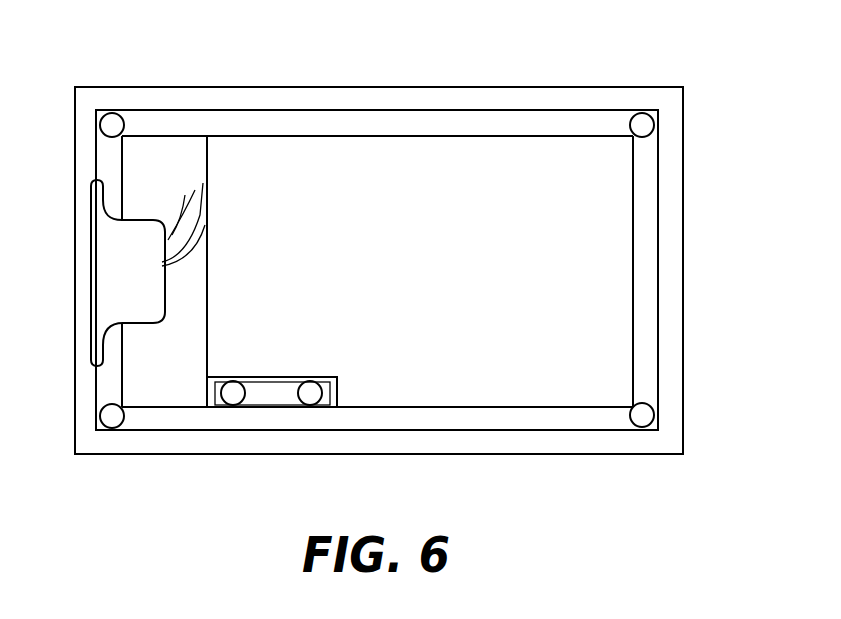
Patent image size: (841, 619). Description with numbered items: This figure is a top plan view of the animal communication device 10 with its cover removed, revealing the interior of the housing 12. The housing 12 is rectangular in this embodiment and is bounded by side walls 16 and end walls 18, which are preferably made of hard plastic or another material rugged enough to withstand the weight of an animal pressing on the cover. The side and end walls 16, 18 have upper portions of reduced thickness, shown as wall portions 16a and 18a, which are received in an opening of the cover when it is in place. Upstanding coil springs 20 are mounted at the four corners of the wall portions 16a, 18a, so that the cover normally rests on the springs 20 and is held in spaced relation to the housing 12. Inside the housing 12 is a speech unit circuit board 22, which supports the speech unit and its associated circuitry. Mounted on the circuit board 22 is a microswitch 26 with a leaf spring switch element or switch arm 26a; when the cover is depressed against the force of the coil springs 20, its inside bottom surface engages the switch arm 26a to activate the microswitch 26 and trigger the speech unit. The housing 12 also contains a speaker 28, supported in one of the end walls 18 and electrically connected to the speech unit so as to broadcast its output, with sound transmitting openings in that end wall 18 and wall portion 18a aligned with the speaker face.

The animal communication device 10 is at (659, 58).
The housing 12 is at (614, 462).
The side walls 16 is at (442, 100).
The upper portions of reduced thickness of side walls 16a is at (250, 125).
The end walls 18 is at (670, 258).
The upper portions of reduced thickness of end walls 18a is at (647, 225).
The coil springs 20 is at (113, 122).
The speech unit circuit board 22 is at (615, 277).
The microswitch 26 is at (338, 391).
The switch arm 26a is at (248, 393).
The speaker 28 is at (97, 273).